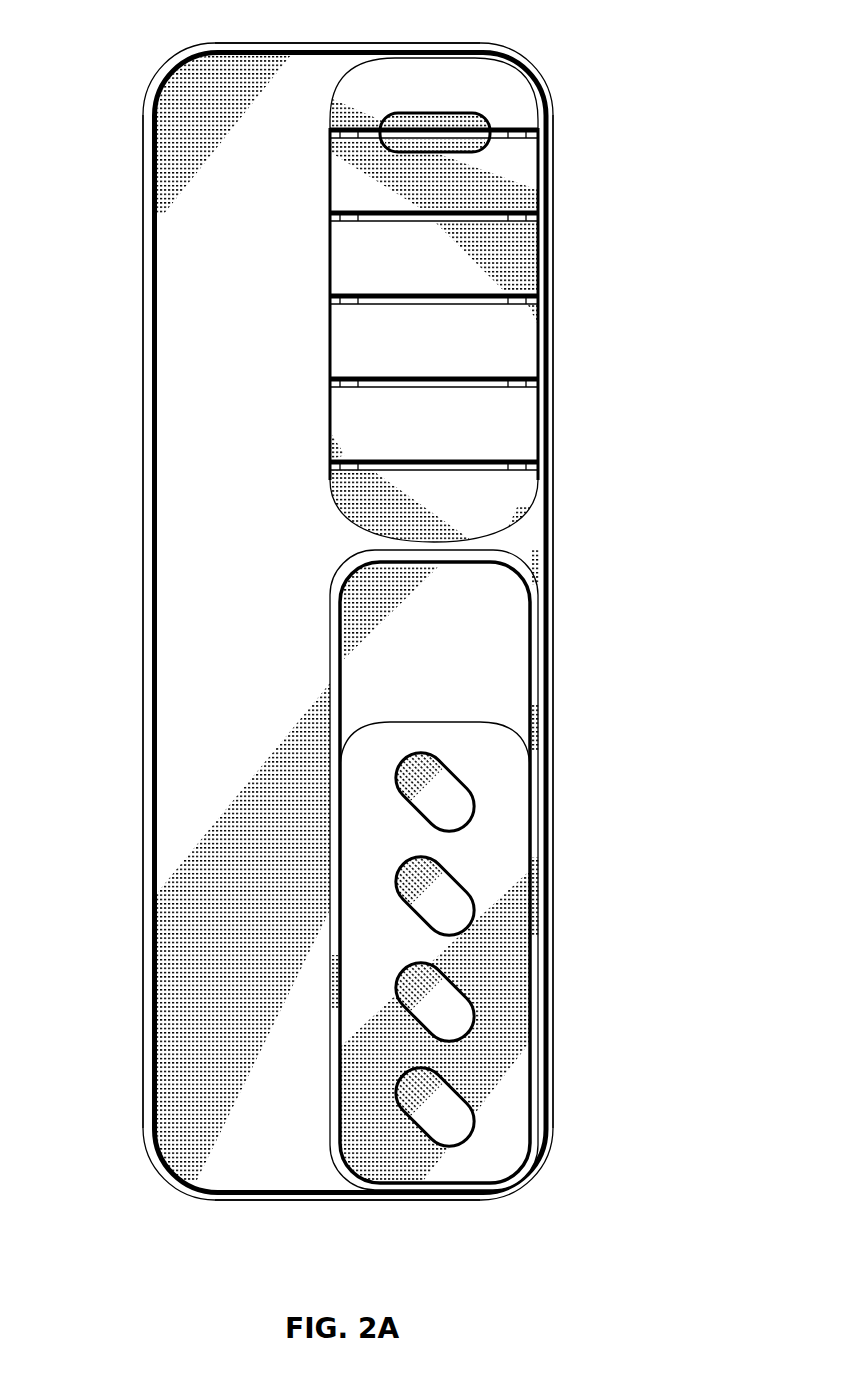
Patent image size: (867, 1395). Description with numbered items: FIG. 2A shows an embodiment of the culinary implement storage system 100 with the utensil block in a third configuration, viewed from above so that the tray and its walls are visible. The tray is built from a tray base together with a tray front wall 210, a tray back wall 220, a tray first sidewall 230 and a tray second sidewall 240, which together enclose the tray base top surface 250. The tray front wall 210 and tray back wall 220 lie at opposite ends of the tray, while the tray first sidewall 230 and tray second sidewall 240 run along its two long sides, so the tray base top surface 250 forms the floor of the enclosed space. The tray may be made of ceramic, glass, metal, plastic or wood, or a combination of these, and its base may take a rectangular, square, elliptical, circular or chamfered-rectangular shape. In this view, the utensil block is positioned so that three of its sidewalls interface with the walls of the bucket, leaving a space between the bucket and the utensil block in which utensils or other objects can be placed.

The electronic device 100 is at (632, 35).
The tray front wall 210 is at (278, 48).
The tray back wall 220 is at (250, 1200).
The tray first sidewall 230 is at (150, 541).
The tray second sidewall 240 is at (546, 537).
The tray base top surface 250 is at (185, 291).